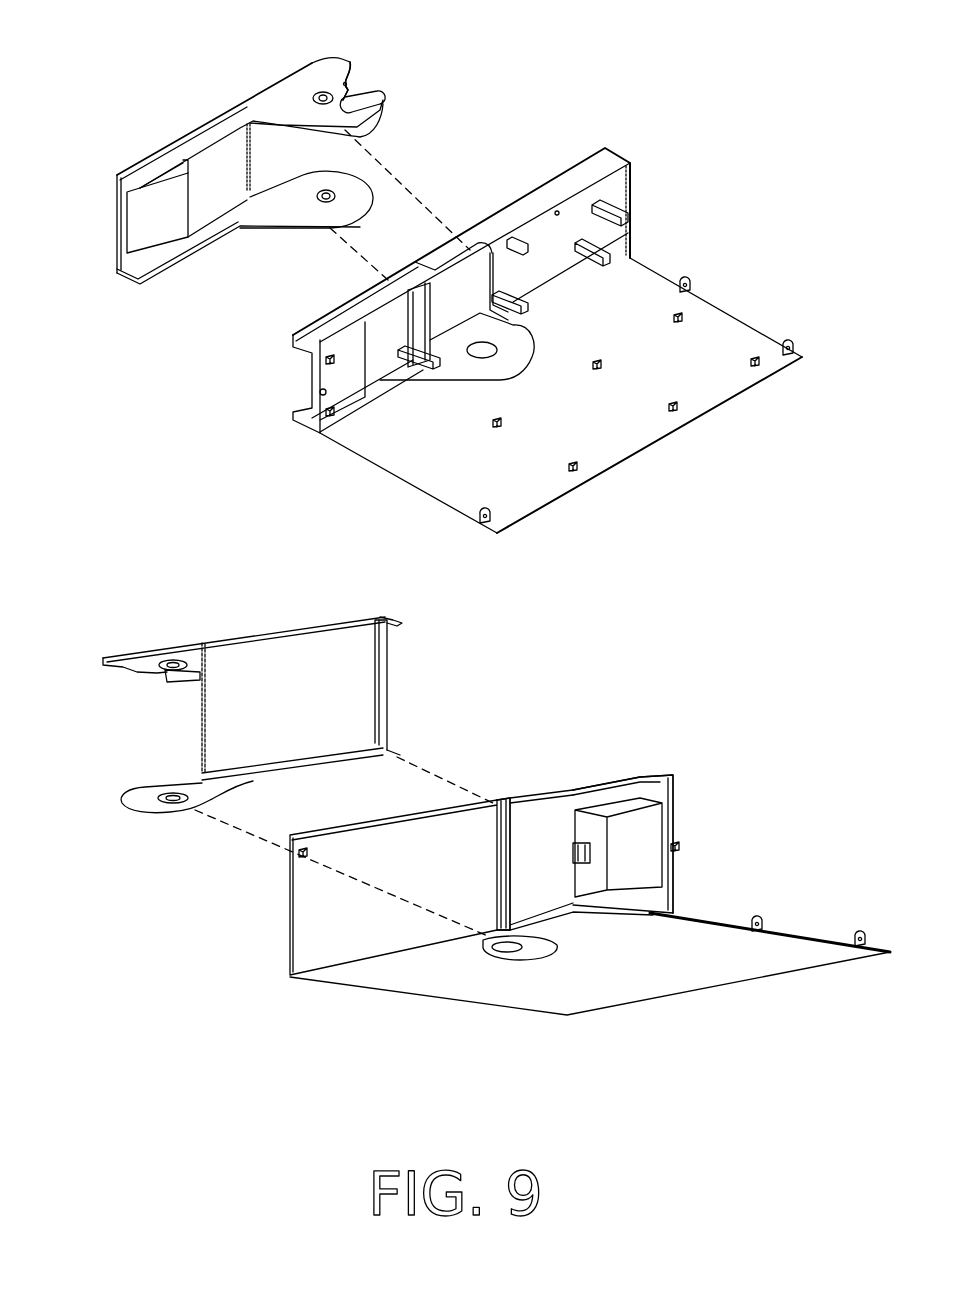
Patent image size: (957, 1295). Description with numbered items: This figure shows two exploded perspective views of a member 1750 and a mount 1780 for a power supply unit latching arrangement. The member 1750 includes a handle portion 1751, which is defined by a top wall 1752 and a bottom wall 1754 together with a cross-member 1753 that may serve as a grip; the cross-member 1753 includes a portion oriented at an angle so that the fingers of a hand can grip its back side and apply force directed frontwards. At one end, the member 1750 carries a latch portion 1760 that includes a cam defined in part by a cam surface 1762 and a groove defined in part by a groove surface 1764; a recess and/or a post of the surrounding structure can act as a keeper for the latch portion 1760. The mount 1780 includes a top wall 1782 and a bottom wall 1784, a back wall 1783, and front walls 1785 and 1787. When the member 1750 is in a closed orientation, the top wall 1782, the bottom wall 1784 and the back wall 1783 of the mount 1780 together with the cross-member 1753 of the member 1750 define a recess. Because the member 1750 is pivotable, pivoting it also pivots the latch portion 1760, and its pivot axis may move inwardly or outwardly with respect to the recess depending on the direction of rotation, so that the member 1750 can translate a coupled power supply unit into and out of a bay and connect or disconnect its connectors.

The member 1750 is at (274, 478).
The handle portion 1751 is at (177, 282).
The top wall 1752 is at (147, 165).
The cross-member 1753 is at (143, 218).
The bottom wall 1754 is at (150, 267).
The latch portion 1760 is at (281, 351).
The cam surface 1762 is at (383, 110).
The groove surface 1764 is at (360, 100).
The mount 1780 is at (580, 180).
The top wall 1782 is at (618, 788).
The back wall 1783 is at (632, 843).
The bottom wall 1784 is at (610, 902).
The front wall 1785 is at (567, 868).
The front wall 1787 is at (460, 880).